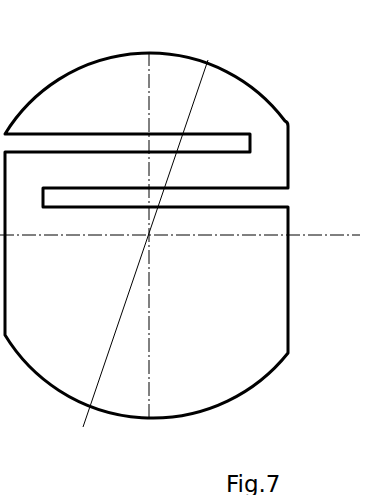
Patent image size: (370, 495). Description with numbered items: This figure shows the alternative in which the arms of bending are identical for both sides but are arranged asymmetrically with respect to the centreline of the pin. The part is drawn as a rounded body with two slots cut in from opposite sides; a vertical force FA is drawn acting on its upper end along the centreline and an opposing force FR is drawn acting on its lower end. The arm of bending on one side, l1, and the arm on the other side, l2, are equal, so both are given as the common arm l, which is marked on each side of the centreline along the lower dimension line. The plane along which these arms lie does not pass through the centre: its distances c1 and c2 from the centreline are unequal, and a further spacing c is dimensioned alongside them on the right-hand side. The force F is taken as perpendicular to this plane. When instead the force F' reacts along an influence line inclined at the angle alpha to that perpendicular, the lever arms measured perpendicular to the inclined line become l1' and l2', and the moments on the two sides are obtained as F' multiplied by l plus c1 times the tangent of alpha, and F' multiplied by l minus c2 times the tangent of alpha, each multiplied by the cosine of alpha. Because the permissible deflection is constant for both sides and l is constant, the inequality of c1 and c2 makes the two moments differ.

The axial force F_A FA is at (149, 5).
The reaction force F_R FR is at (149, 426).
The force F is at (228, 0).
The angle alpha is at (193, 104).
The arm of bending l1 is at (43, 207).
The arm of bending l2 is at (250, 137).
The arm of bending l is at (247, 343).
The slot spacing c is at (321, 250).
The distance c1 is at (311, 229).
The distance c2 is at (349, 134).